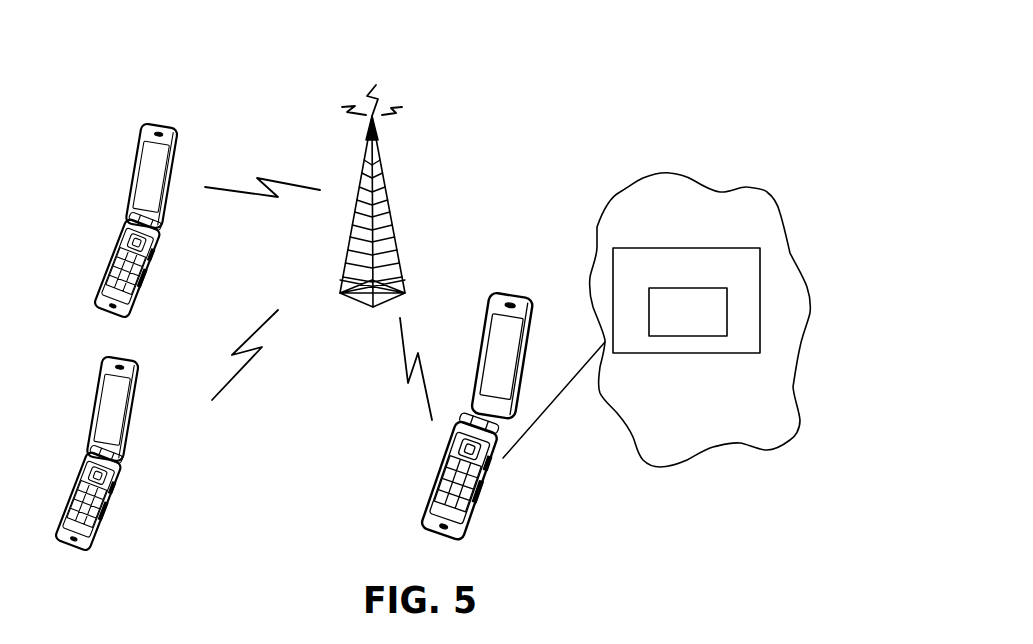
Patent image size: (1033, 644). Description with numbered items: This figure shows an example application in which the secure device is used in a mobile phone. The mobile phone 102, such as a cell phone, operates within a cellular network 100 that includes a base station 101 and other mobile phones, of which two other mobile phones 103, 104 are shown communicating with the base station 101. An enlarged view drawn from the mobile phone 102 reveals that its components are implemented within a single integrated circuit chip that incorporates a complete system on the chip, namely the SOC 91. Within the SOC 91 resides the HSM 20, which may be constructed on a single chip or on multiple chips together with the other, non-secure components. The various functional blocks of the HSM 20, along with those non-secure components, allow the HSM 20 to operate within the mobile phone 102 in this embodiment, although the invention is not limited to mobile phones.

The cellular network 100 is at (534, 100).
The base station 101 is at (388, 184).
The mobile phone 102 is at (492, 519).
The mobile phone 103 is at (107, 523).
The mobile phone 104 is at (155, 275).
The system on chip (SOC) 91 is at (705, 248).
The HSM 20 is at (727, 292).